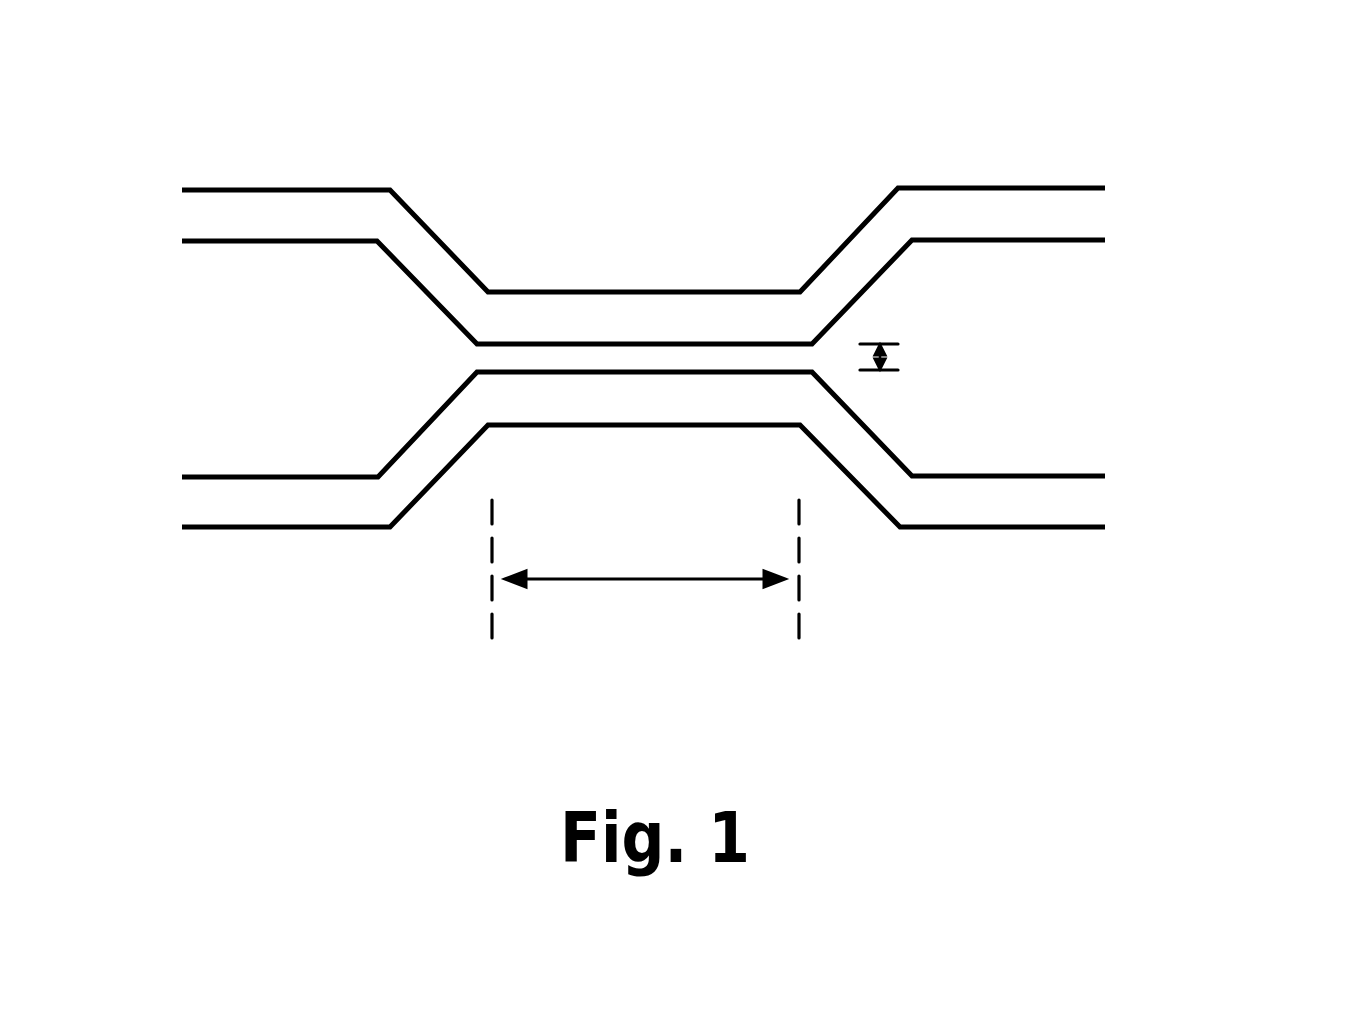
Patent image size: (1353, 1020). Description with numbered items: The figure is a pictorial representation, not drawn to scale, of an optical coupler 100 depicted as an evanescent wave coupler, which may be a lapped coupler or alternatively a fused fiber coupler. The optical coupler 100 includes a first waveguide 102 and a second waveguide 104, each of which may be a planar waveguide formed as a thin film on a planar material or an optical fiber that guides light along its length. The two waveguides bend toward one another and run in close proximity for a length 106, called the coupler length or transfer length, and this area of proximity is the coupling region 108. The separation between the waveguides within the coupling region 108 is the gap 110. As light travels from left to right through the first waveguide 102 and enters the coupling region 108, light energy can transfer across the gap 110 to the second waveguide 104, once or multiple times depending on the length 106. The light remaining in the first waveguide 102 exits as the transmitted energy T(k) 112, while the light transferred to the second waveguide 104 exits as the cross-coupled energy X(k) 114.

The optical coupler 100 is at (1152, 100).
The first waveguide 102 is at (259, 203).
The second waveguide 104 is at (262, 515).
The length 106 is at (697, 579).
The coupling region 108 is at (643, 200).
The gap 110 is at (893, 357).
The transmitted energy T(k) 112 is at (1200, 222).
The cross-coupled energy X(k) 114 is at (1200, 510).